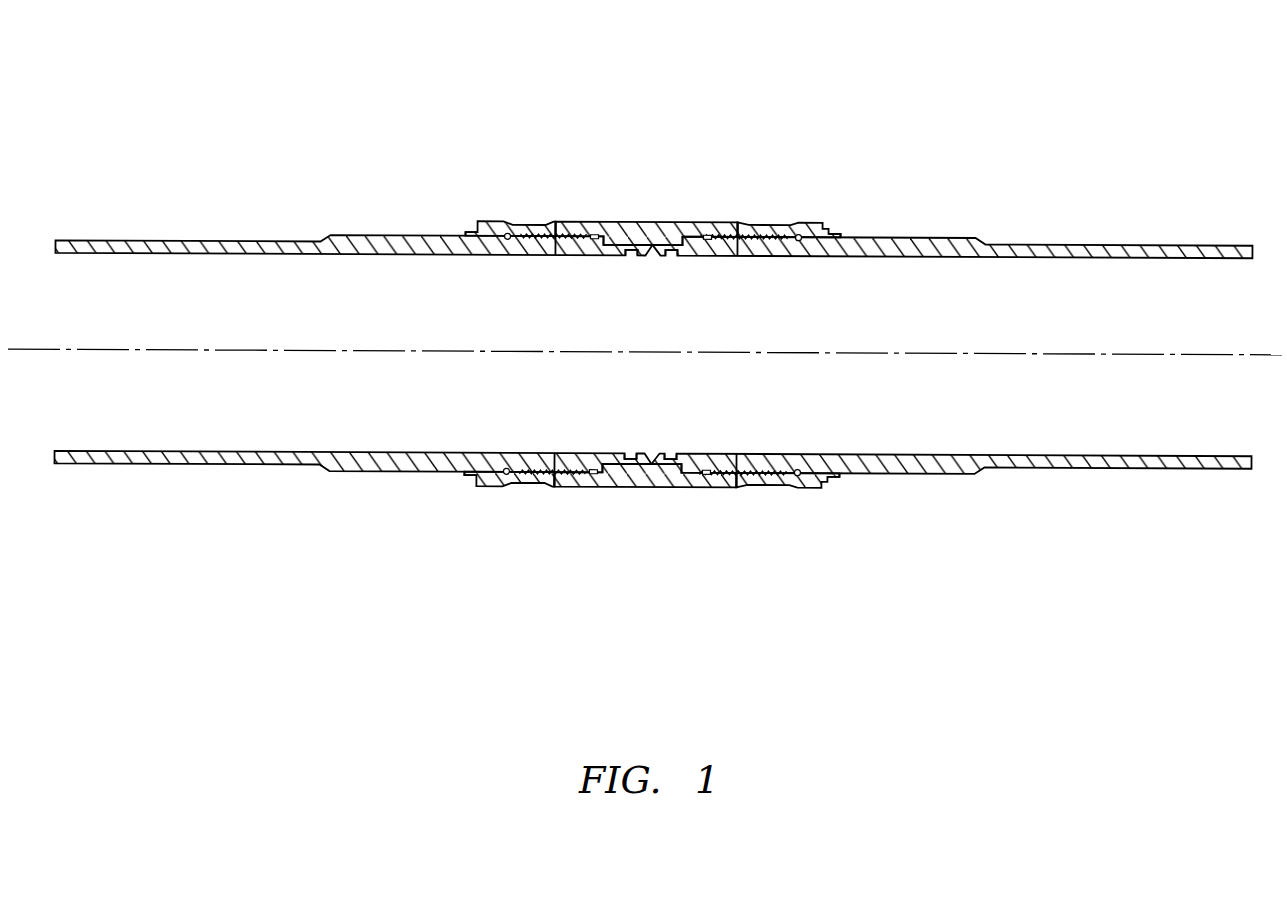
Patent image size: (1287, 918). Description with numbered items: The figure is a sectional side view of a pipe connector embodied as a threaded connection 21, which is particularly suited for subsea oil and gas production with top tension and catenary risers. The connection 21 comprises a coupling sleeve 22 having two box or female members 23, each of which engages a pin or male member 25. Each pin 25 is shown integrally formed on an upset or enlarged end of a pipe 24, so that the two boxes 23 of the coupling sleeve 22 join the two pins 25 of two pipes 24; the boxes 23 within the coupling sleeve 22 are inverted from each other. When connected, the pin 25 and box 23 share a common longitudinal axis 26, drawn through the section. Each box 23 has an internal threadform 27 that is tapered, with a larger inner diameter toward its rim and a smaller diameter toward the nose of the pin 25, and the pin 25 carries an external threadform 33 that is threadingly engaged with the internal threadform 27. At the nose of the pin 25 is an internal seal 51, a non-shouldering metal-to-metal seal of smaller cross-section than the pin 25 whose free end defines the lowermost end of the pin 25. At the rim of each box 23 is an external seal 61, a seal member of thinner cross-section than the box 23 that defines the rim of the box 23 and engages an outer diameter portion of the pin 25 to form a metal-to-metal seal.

The threaded connection 21 is at (150, 93).
The coupling sleeve 22 is at (640, 224).
The box 23 is at (778, 225).
The pipe 24 is at (160, 243).
The pin 25 is at (490, 222).
The longitudinal axis 26 is at (1130, 245).
The internal threadform 27 is at (555, 257).
The external threadform 33 is at (562, 233).
The internal seal 51 is at (630, 259).
The external seal 61 is at (462, 229).